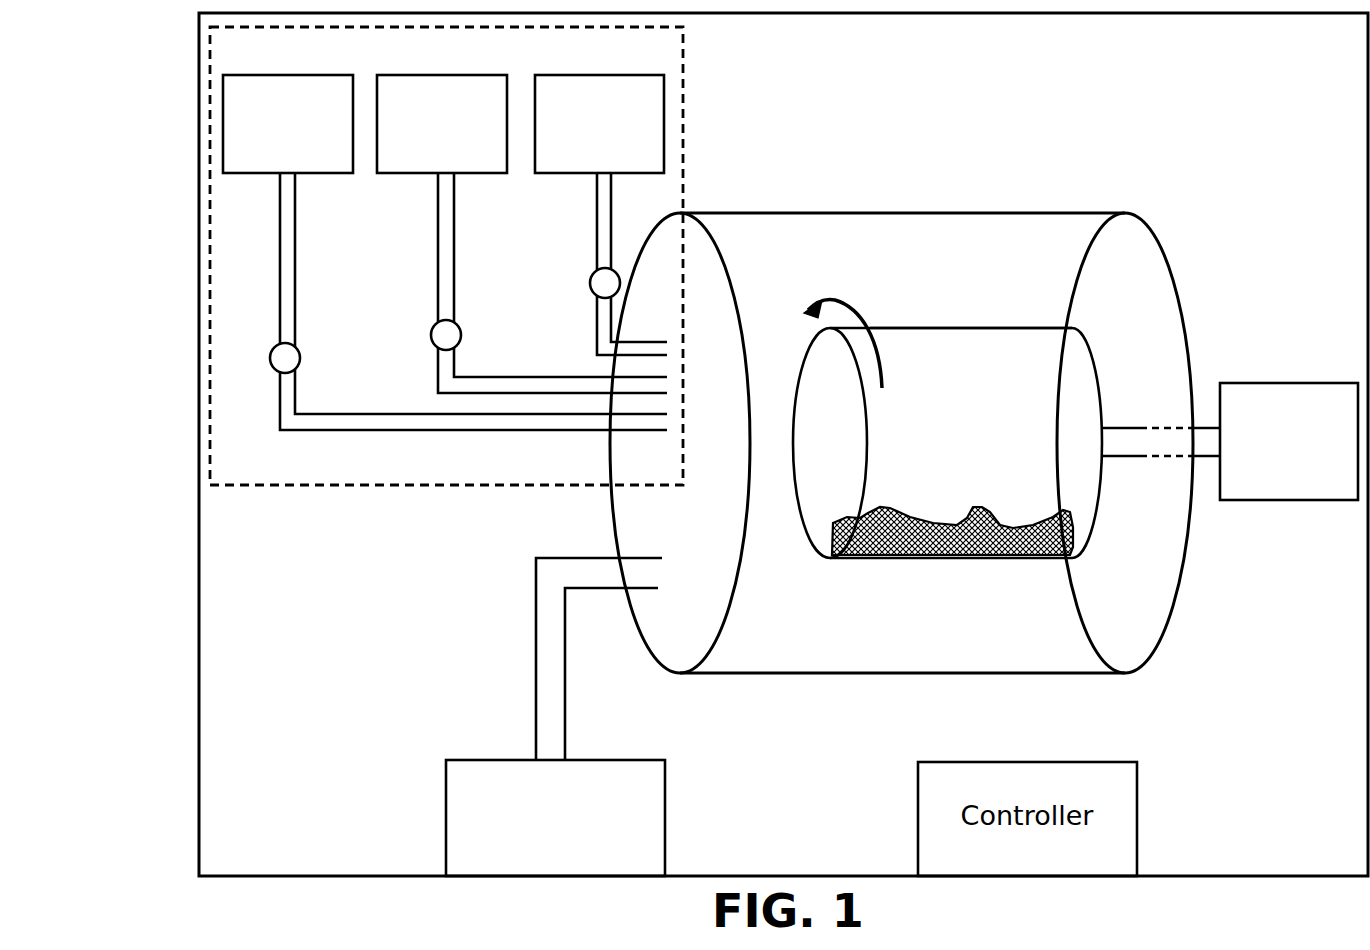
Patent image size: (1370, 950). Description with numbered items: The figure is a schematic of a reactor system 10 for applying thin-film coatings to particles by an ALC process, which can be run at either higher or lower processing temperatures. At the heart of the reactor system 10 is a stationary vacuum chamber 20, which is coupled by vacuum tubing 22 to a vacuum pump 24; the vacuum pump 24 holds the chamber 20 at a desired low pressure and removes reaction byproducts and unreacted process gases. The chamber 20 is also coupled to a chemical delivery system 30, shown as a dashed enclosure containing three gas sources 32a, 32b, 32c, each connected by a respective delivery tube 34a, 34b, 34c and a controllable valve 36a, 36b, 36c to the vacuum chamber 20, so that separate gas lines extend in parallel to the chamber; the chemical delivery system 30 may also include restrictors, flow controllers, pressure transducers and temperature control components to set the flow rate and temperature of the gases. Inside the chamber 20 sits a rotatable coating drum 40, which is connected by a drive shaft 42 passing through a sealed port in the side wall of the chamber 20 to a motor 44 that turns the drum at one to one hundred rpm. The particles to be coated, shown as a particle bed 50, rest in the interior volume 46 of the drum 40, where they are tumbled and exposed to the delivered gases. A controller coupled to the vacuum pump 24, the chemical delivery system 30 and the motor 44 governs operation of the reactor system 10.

The reactor system 10 is at (1183, 170).
The vacuum chamber 20 is at (935, 212).
The vacuum tubing 22 is at (535, 658).
The vacuum pump 24 is at (445, 813).
The chemical delivery system 30 is at (418, 487).
The gas source 32a is at (264, 75).
The gas source 32b is at (423, 75).
The gas source 32c is at (575, 75).
The delivery tube 34a is at (296, 243).
The delivery tube 34b is at (455, 247).
The delivery tube 34c is at (597, 230).
The controllable valve 36a is at (300, 358).
The controllable valve 36b is at (461, 333).
The controllable valve 36c is at (590, 283).
The rotatable coating drum 40 is at (947, 327).
The drive shaft 42 is at (1135, 427).
The motor 44 is at (1312, 382).
The interior volume 46 is at (1022, 347).
The particle bed 50 is at (943, 560).